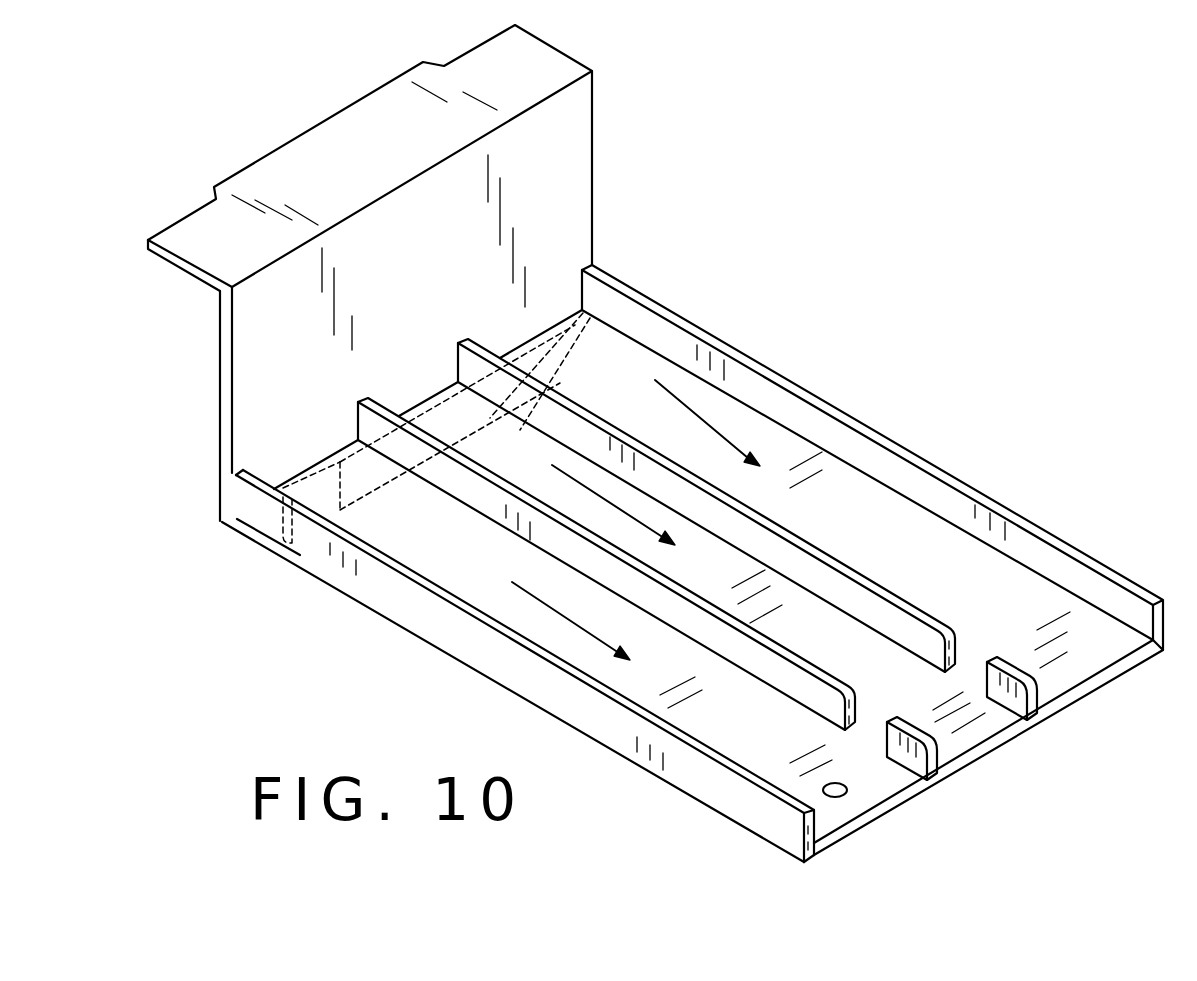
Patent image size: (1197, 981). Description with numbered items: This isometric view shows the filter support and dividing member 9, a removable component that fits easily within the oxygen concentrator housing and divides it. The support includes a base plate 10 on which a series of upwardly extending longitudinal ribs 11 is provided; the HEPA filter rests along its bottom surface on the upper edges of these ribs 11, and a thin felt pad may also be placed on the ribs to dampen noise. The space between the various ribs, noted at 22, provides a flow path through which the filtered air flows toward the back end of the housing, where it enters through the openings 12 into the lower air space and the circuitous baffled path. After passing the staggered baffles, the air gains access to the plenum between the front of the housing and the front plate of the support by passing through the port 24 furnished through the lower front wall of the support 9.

The filter support and dividing member 9 is at (613, 160).
The base plate 10 is at (1105, 652).
The longitudinal ribs 11 is at (708, 752).
The openings 12 is at (848, 797).
The space between ribs 22 is at (620, 510).
The port 24 is at (316, 478).